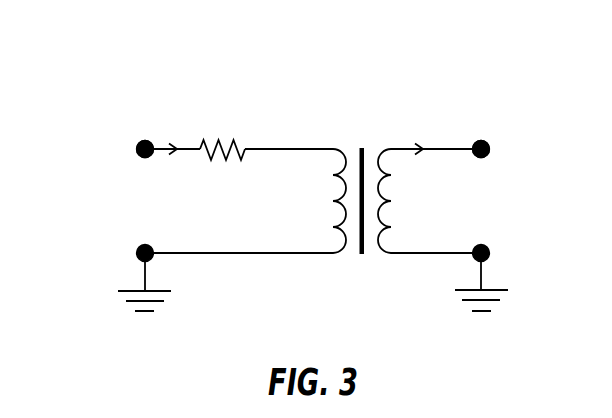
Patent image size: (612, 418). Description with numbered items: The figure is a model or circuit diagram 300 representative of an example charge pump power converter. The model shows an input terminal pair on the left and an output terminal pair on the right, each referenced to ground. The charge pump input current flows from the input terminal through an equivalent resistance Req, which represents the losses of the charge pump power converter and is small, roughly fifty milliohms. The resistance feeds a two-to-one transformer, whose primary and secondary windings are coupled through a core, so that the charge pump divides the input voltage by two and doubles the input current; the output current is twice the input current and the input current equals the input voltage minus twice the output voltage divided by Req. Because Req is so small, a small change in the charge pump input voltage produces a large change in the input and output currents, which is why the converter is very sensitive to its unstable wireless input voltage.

The circuit diagram 300 is at (108, 81).
The equivalent resistance Req is at (222, 171).